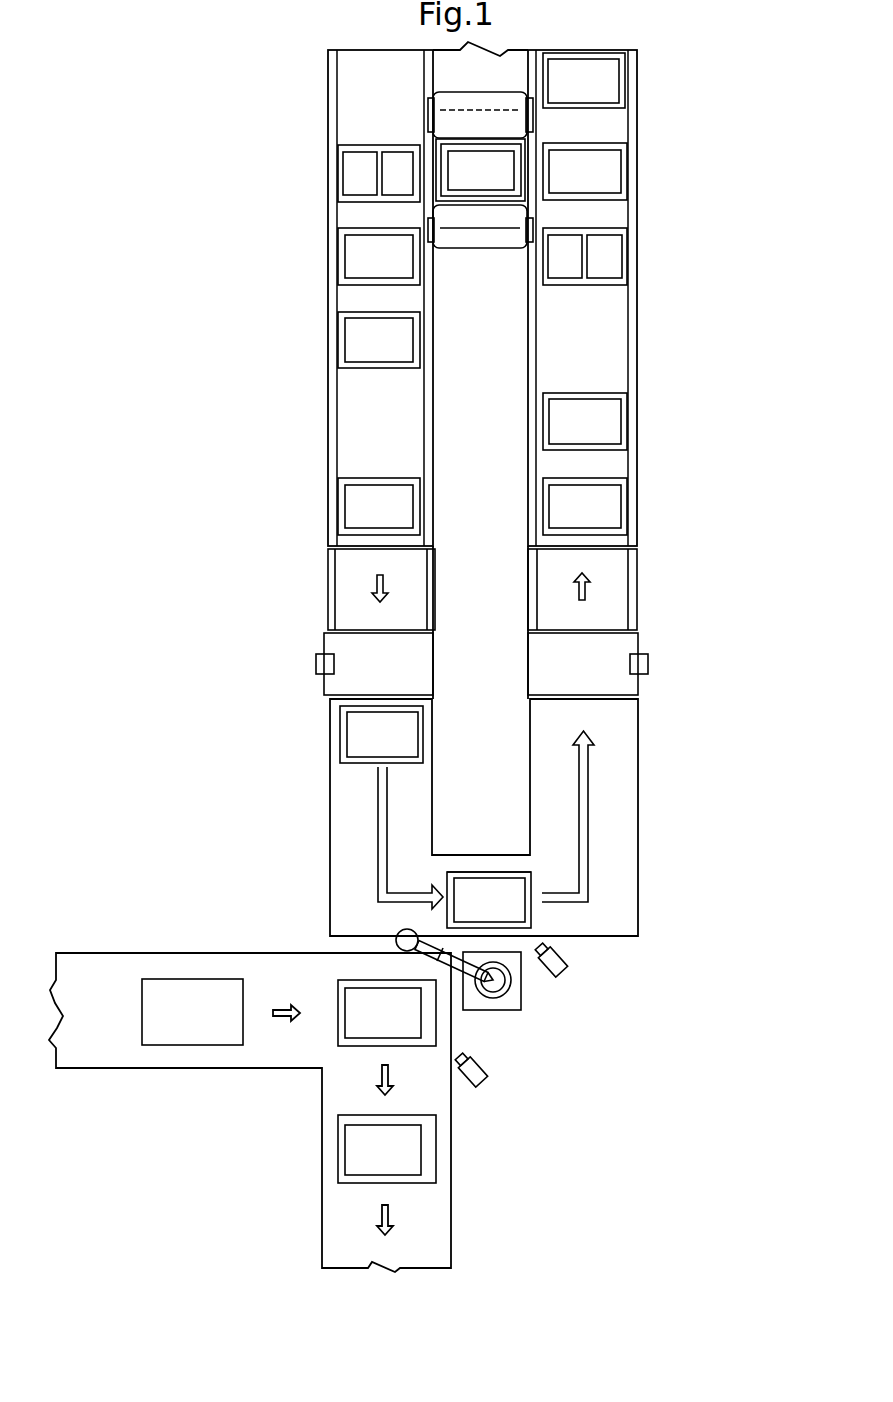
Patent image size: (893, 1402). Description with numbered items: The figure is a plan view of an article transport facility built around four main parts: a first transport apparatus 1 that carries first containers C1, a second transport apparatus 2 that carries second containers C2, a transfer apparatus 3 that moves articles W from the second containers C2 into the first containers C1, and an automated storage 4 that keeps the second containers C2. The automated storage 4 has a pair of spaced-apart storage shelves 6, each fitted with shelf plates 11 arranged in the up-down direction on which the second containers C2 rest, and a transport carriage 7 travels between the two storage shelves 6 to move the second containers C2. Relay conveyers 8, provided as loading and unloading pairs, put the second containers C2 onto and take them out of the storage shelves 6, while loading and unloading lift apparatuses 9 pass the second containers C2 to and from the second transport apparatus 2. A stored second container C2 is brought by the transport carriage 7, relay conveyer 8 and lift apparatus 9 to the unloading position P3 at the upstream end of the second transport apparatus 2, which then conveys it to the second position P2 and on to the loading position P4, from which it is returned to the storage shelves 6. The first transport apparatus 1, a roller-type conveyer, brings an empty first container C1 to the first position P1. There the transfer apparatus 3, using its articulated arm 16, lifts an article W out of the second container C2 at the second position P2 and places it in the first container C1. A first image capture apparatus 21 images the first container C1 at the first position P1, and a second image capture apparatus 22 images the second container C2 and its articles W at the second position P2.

The first transport apparatus 1 is at (108, 970).
The second transport apparatus 2 is at (625, 832).
The transfer apparatus 3 is at (478, 961).
The automated storage 4 is at (457, 370).
The storage shelves 6 is at (492, 374).
The transport carriage 7 is at (492, 248).
The relay conveyers 8 is at (343, 582).
The lift apparatuses 9 is at (330, 660).
The shelf plates 11 is at (347, 127).
The articulated arm 16 is at (442, 948).
The first image capture apparatus 21 is at (487, 1085).
The second image capture apparatus 22 is at (568, 966).
The article W is at (407, 165).
The first container C1 is at (193, 1046).
The second container C2 is at (464, 139).
The first position P1 is at (313, 1043).
The second position P2 is at (473, 858).
The unloading position P3 is at (313, 762).
The loading position P4 is at (683, 729).